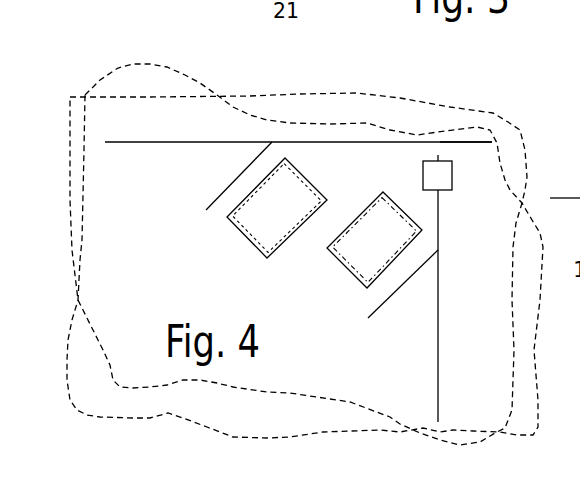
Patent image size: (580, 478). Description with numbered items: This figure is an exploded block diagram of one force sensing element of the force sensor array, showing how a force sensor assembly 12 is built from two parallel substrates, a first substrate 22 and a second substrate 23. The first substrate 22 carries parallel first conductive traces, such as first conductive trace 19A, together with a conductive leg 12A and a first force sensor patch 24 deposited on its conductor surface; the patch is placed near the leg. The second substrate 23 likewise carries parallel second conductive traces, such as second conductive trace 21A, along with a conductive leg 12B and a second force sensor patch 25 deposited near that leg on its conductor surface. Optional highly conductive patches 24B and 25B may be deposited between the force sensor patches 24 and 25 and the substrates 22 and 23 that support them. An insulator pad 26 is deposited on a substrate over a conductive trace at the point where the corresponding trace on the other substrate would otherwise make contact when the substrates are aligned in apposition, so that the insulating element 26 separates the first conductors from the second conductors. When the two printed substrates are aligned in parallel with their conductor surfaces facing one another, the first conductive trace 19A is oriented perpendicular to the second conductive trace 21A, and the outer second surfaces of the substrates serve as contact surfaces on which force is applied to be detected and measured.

The force sensor assembly 12 is at (120, 70).
The conductive leg 12A is at (206, 203).
The conductive leg 12B is at (375, 312).
The first conductive trace 19A is at (472, 145).
The second conductive trace 21A is at (437, 347).
The first substrate 22 is at (510, 123).
The second substrate 23 is at (168, 413).
The first force sensor patch 24 is at (253, 239).
The highly conductive patch 24B is at (234, 218).
The second force sensor patch 25 is at (347, 265).
The highly conductive patch 25B is at (357, 279).
The insulator pad 26 is at (422, 172).